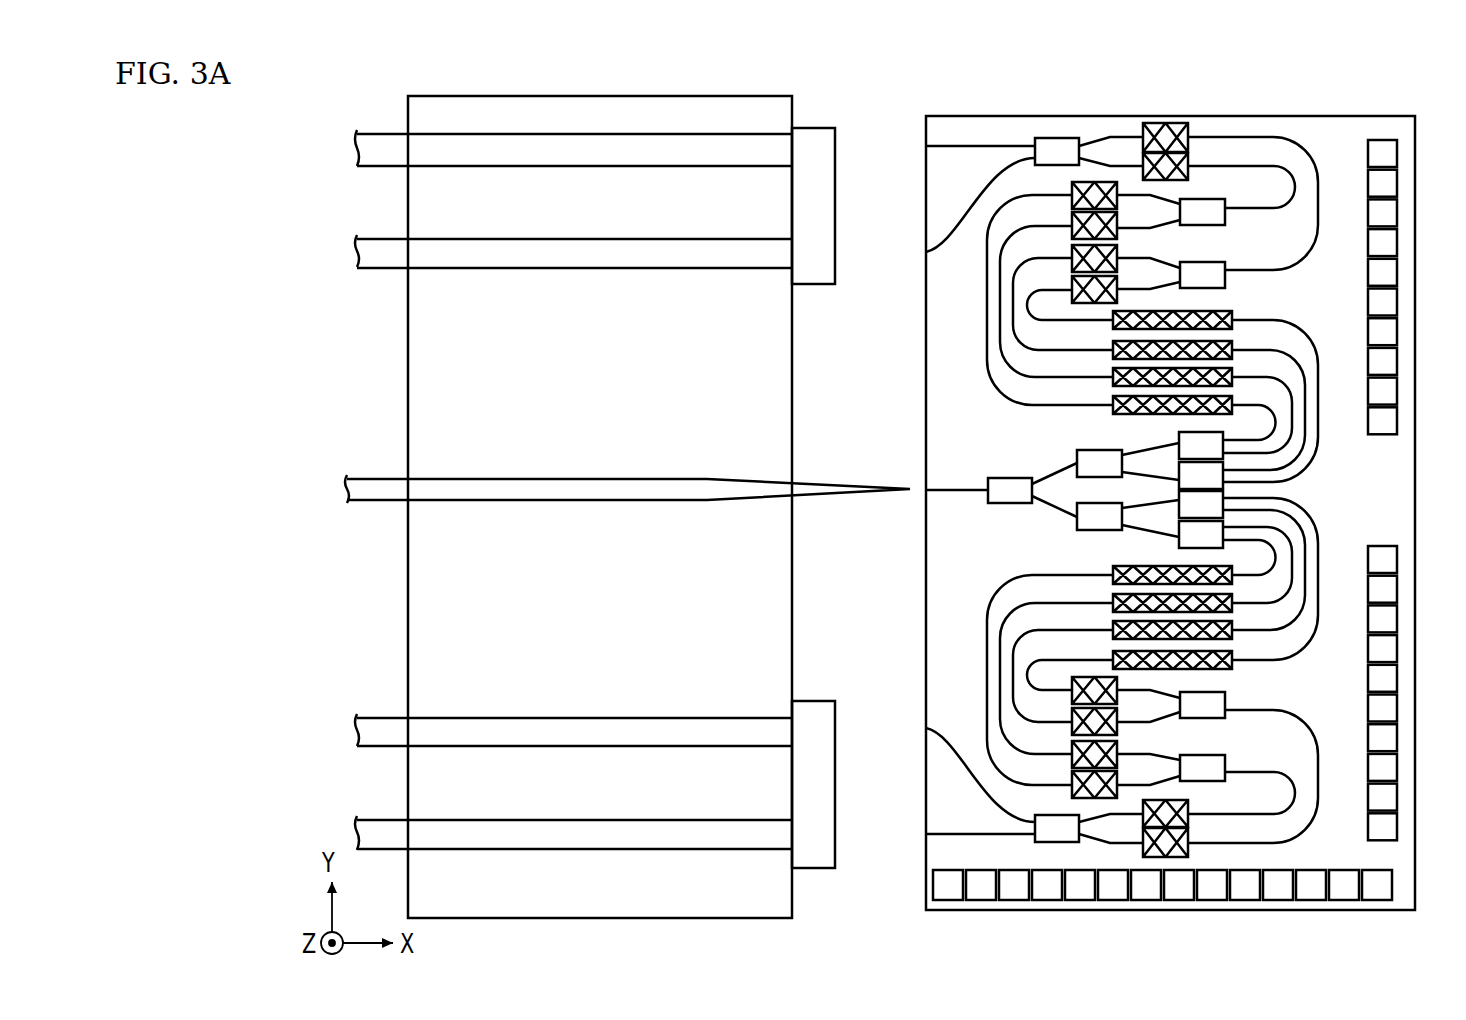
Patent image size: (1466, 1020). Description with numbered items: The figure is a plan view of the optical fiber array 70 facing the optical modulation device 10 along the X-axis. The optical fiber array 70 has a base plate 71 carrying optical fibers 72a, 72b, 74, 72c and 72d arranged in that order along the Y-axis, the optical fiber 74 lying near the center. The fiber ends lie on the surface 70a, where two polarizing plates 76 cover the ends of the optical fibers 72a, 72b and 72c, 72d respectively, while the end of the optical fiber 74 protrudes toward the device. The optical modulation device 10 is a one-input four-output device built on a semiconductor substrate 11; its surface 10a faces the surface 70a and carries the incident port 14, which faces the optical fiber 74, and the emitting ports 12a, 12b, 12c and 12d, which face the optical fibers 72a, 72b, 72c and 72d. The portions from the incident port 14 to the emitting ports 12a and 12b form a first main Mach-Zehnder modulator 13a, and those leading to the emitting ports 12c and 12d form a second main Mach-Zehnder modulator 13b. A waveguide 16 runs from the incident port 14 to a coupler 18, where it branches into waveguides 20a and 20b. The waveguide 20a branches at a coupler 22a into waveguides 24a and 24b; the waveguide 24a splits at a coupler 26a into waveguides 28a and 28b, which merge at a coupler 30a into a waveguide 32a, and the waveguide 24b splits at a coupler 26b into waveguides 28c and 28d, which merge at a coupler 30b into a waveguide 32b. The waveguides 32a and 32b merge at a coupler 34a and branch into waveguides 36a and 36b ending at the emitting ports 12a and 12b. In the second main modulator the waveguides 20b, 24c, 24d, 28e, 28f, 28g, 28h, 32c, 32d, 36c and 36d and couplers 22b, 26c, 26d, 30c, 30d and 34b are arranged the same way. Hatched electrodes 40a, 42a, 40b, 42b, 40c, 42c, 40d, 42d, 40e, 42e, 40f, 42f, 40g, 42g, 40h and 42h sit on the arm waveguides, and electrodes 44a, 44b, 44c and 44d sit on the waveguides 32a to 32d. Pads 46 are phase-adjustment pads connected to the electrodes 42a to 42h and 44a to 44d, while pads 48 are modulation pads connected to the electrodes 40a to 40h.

The optical modulation device 10 is at (1154, 508).
The surface 10a is at (926, 895).
The substrate 11 is at (940, 116).
The emitting port 12a is at (925, 143).
The emitting port 12b is at (926, 252).
The emitting port 12c is at (926, 728).
The emitting port 12d is at (926, 836).
The Mach-Zehnder modulator 13a is at (986, 394).
The Mach-Zehnder modulator 13b is at (988, 582).
The incident port 14 is at (926, 488).
The waveguide 16 is at (962, 490).
The coupler 18 is at (996, 503).
The waveguide 20a is at (1050, 472).
The waveguide 20b is at (1052, 508).
The coupler 22a is at (1078, 452).
The coupler 22b is at (1088, 530).
The waveguide 24a is at (1114, 440).
The waveguide 24b is at (1160, 472).
The waveguide 24c is at (1158, 533).
The waveguide 24d is at (1154, 503).
The coupler 26a is at (1250, 453).
The coupler 26b is at (1250, 482).
The coupler 26c is at (1250, 527).
The coupler 26d is at (1250, 498).
The waveguide 28a is at (987, 372).
The waveguide 28b is at (1000, 338).
The waveguide 28c is at (1013, 310).
The waveguide 28d is at (1027, 298).
The waveguide 28e is at (987, 606).
The waveguide 28f is at (1000, 642).
The waveguide 28g is at (1013, 670).
The waveguide 28h is at (1027, 684).
The coupler 30a is at (1225, 206).
The coupler 30b is at (1225, 270).
The coupler 30c is at (1225, 774).
The coupler 30d is at (1225, 712).
The waveguide 32a is at (1240, 166).
The waveguide 32b is at (1285, 137).
The waveguide 32c is at (1262, 814).
The waveguide 32d is at (1304, 832).
The coupler 34a is at (1045, 138).
The coupler 34b is at (1048, 843).
The waveguide 36a is at (980, 146).
The waveguide 36b is at (978, 210).
The waveguide 36c is at (978, 770).
The waveguide 36d is at (980, 876).
The electrode 40a is at (1236, 402).
The electrode 40b is at (1236, 376).
The electrode 40c is at (1240, 350).
The electrode 40d is at (1214, 311).
The electrode 40e is at (1236, 576).
The electrode 40f is at (1236, 604).
The electrode 40g is at (1240, 630).
The electrode 40h is at (1214, 669).
The electrode 42a is at (1072, 190).
The electrode 42b is at (1072, 224).
The electrode 42c is at (1114, 258).
The electrode 42d is at (1072, 282).
The electrode 42e is at (1072, 786).
The electrode 42f is at (1072, 756).
The electrode 42g is at (1114, 724).
The electrode 42h is at (1072, 700).
The electrode 44a is at (1186, 158).
The electrode 44b is at (1160, 123).
The electrode 44c is at (1182, 822).
The electrode 44d is at (1178, 857).
The pads 46 is at (1378, 893).
The pads 48 is at (1382, 146).
The optical fiber array 70 is at (627, 497).
The surface 70a is at (794, 900).
The base plate 71 is at (624, 100).
The optical fiber 72a is at (378, 145).
The optical fiber 72b is at (370, 245).
The optical fiber 72c is at (370, 725).
The optical fiber 72d is at (370, 825).
The optical fiber 74 is at (374, 484).
The polarizing plates 76 is at (812, 140).